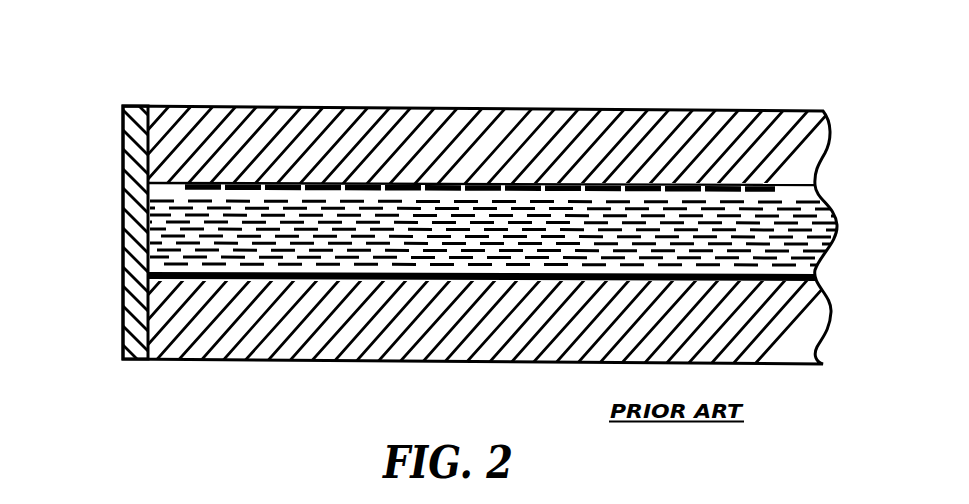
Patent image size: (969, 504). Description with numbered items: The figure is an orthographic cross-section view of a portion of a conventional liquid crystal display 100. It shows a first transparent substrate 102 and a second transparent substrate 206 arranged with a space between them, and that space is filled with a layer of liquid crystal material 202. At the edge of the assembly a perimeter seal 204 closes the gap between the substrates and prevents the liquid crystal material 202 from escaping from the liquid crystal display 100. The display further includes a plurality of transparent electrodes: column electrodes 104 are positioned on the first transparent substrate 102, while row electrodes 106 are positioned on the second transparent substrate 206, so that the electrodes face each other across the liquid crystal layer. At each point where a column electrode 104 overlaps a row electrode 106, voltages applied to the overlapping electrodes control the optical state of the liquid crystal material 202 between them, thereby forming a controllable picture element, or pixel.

The liquid crystal display 100 is at (478, 422).
The first transparent substrate 102 is at (396, 107).
The column electrodes 104 is at (199, 183).
The row electrodes 106 is at (816, 284).
The liquid crystal material 202 is at (484, 232).
The perimeter seal 204 is at (123, 153).
The second transparent substrate 206 is at (224, 359).